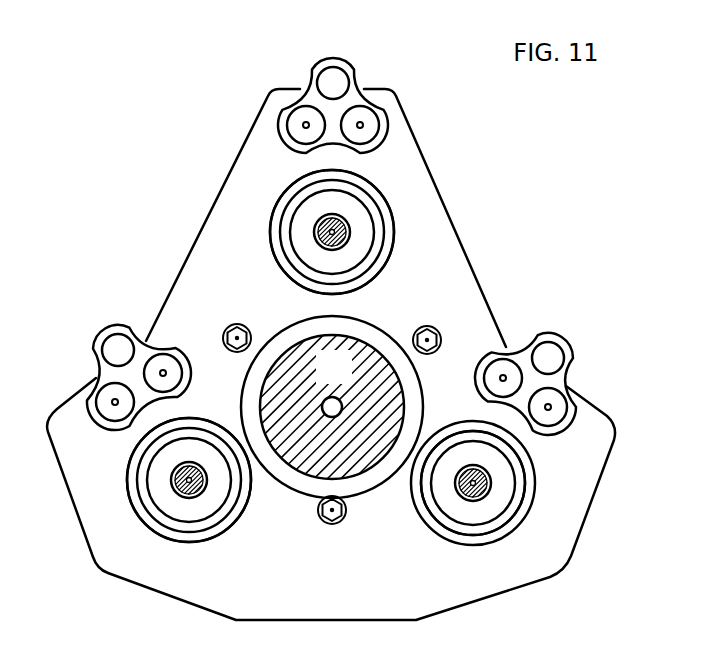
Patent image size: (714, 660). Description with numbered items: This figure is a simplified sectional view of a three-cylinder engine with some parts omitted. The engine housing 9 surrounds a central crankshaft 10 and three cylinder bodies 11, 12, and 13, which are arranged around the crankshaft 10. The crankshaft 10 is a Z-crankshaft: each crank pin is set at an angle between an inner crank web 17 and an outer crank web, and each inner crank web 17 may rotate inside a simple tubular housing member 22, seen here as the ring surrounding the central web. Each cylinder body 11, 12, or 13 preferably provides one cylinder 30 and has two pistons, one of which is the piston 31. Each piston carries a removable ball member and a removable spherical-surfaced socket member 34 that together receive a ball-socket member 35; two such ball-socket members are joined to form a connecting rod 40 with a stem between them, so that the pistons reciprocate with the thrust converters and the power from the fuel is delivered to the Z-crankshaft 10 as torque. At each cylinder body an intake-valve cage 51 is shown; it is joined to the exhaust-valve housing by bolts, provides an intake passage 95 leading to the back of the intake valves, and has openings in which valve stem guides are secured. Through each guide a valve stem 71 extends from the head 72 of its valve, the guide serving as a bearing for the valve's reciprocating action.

The engine housing 9 is at (199, 240).
The crankshaft 10 is at (302, 407).
The cylinder body 11 is at (390, 213).
The cylinder body 12 is at (515, 528).
The cylinder body 13 is at (238, 522).
The inner crank web 17 is at (320, 381).
The tubular housing member 22 is at (373, 322).
The cylinder 30 is at (284, 272).
The piston 31 is at (393, 233).
The spherical-surfaced socket member 34 is at (363, 248).
The ball-socket member 35 is at (467, 532).
The connecting rod 40 is at (330, 231).
The intake-valve cage 51 is at (318, 58).
The valve stem 71 is at (363, 123).
The valve head 72 is at (340, 130).
The intake passage 95 is at (340, 78).